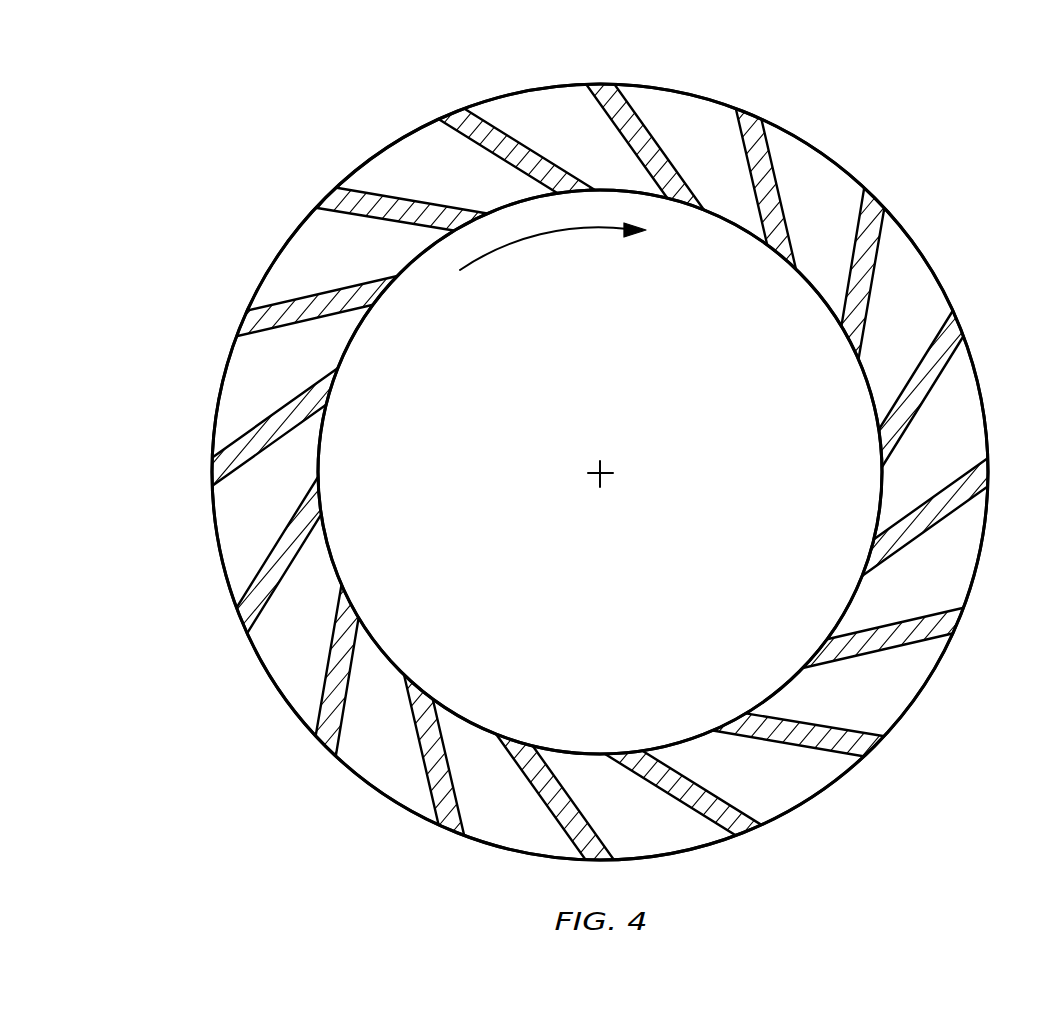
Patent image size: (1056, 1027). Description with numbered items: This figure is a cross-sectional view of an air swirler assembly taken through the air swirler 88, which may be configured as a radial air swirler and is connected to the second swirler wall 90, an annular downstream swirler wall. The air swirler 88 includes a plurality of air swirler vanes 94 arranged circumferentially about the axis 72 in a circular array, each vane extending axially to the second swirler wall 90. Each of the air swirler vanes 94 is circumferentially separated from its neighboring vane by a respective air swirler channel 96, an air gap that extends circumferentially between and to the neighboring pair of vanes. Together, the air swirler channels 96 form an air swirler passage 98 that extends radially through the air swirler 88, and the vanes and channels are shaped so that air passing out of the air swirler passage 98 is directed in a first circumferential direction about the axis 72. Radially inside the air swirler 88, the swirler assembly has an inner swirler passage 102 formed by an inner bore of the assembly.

The axis 72 is at (604, 469).
The air swirler 88 is at (993, 178).
The second swirler wall 90 is at (277, 690).
The air swirler vanes 94 is at (600, 472).
The air swirler channel 96 is at (297, 253).
The air swirler passage 98 is at (562, 104).
The inner swirler passage 102 is at (570, 637).